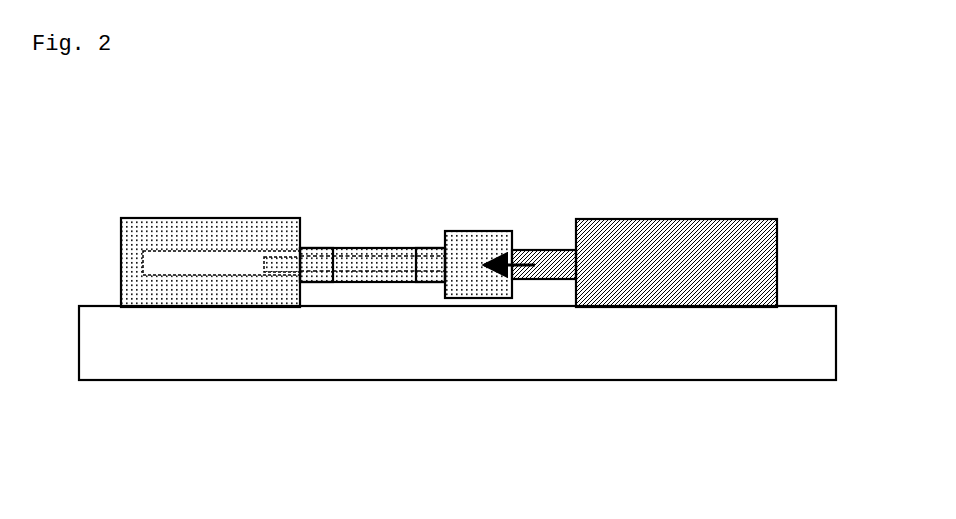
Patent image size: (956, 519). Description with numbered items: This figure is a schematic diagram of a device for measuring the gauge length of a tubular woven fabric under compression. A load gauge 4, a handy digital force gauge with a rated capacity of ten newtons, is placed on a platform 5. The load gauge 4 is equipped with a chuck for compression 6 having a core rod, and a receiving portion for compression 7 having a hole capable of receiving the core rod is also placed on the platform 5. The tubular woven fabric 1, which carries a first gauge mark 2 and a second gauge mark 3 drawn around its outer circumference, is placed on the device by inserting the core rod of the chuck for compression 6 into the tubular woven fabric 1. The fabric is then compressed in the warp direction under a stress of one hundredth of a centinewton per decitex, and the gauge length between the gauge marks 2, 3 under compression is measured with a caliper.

The tubular woven fabric 1 is at (374, 244).
The first gauge mark 2 is at (331, 244).
The second gauge mark 3 is at (419, 244).
The load gauge 4 is at (696, 212).
The platform 5 is at (463, 384).
The chuck for compression 6 is at (479, 226).
The receiving portion for compression 7 is at (227, 212).